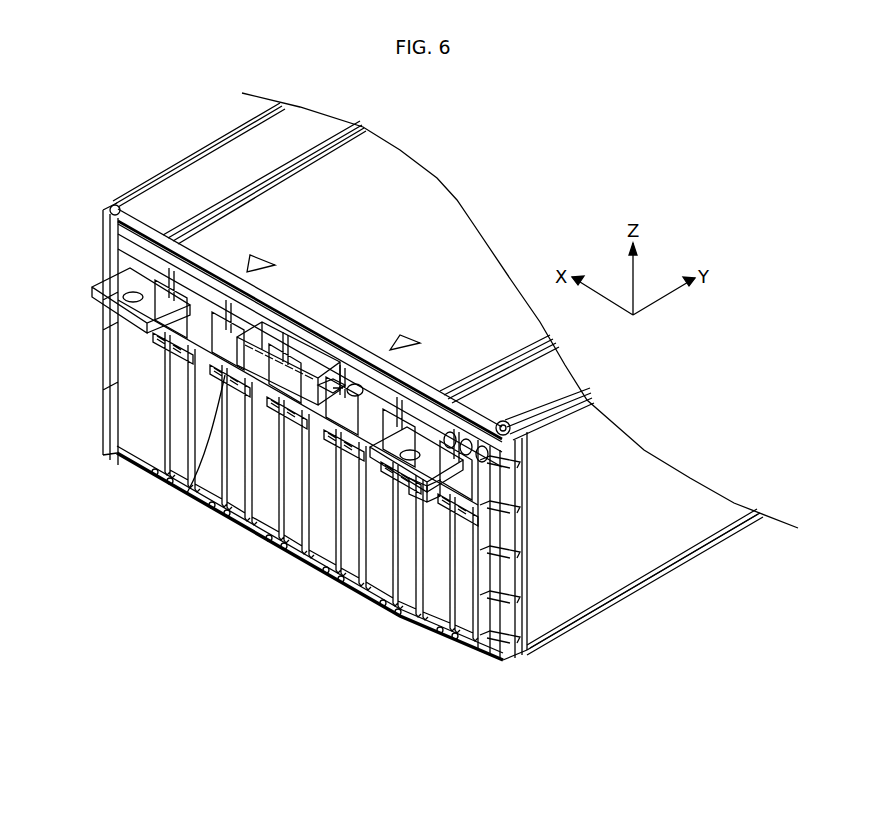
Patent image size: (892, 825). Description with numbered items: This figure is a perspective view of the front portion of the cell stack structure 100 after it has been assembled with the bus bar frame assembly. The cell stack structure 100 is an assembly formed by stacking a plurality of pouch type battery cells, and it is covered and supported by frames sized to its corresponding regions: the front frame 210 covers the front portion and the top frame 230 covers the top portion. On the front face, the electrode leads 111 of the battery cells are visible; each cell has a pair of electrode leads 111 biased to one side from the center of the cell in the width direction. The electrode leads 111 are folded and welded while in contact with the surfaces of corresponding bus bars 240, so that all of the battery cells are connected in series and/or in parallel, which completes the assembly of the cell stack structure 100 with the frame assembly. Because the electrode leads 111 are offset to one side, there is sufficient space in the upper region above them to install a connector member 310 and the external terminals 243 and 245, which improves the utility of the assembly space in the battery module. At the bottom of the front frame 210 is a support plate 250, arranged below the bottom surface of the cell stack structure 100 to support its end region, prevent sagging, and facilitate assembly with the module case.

The cell stack structure 100 is at (678, 571).
The electrode leads 111 is at (313, 543).
The front frame 210 is at (482, 590).
The top frame 230 is at (423, 213).
The bus bars 240 is at (287, 543).
The external terminal 243 is at (120, 287).
The external terminal 245 is at (387, 590).
The support plate 250 is at (530, 650).
The connector member 310 is at (187, 493).